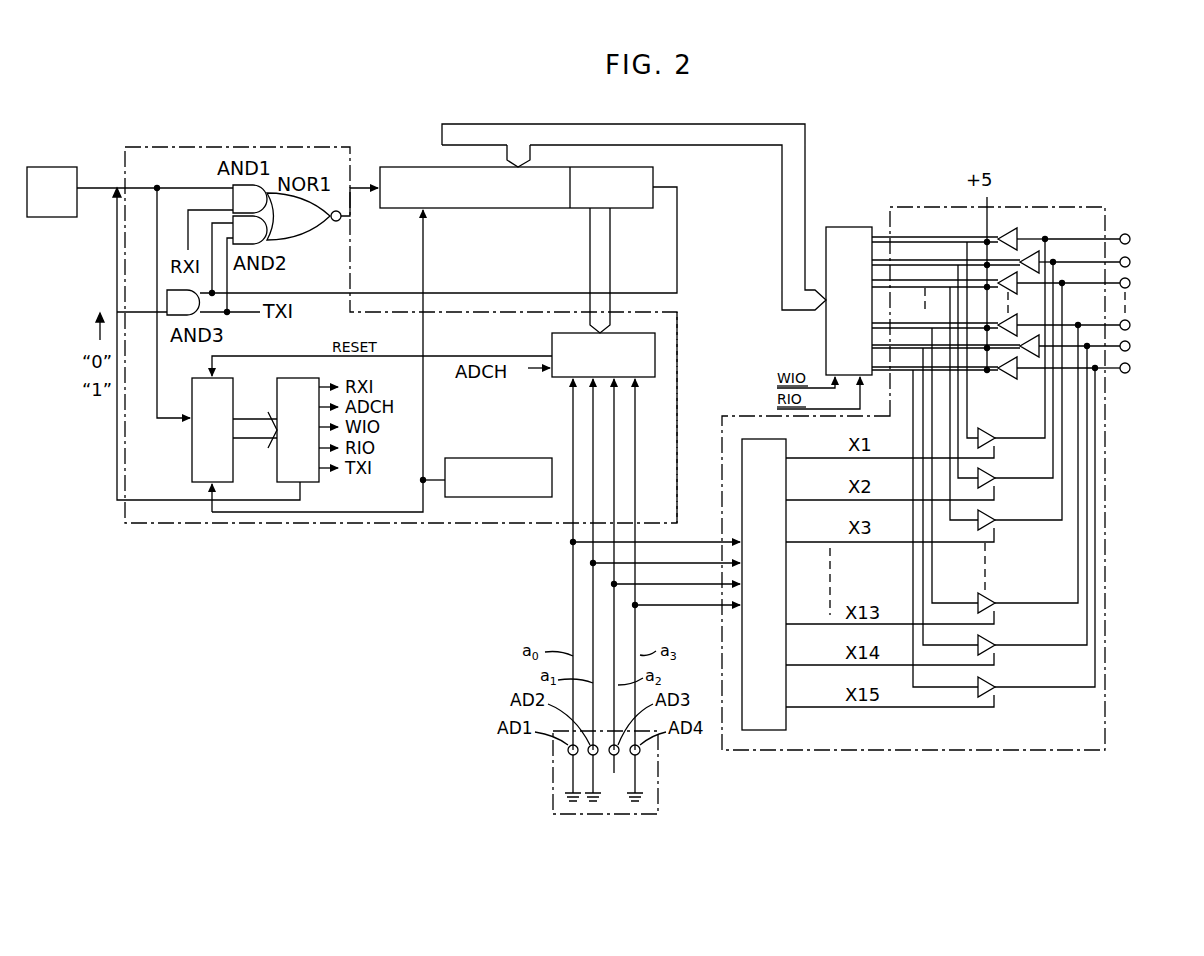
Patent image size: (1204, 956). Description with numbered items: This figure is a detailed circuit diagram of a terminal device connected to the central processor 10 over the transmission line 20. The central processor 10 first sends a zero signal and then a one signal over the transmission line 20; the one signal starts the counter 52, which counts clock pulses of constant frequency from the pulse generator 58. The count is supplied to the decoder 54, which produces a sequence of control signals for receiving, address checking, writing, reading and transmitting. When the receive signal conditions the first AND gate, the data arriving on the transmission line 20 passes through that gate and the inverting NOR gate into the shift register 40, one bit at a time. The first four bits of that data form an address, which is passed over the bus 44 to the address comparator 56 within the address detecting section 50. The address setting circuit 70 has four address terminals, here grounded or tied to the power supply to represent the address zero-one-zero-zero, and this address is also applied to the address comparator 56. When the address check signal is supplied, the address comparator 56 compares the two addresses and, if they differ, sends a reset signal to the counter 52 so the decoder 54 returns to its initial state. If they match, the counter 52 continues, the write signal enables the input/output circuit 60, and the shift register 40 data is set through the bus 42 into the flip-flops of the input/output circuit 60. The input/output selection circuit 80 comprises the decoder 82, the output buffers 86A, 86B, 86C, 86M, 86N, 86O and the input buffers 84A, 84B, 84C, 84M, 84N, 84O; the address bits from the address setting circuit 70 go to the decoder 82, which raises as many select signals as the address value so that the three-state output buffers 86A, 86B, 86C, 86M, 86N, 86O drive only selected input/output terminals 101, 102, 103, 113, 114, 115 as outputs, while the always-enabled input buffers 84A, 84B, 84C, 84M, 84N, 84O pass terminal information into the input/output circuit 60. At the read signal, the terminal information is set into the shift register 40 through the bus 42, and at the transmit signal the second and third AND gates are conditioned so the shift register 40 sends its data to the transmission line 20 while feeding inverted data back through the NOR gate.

The central processor 10 is at (60, 217).
The transmission line 20 is at (92, 187).
The shift register 40 is at (653, 178).
The bus 42 is at (535, 124).
The bus 44 is at (610, 252).
The address detection circuit 50 is at (677, 352).
The counter 52 is at (192, 455).
The decoder 54 is at (277, 463).
The address comparator 56 is at (552, 342).
The pulse generator 58 is at (510, 458).
The input/output circuit 60 is at (851, 227).
The address setting circuit 70 is at (553, 800).
The input/output selection circuit 80 is at (1105, 215).
The decoder 82 is at (786, 448).
The input buffer 84A is at (1005, 228).
The input buffer 84B is at (1028, 251).
The input buffer 84C is at (1008, 272).
The input buffer 84M is at (1007, 336).
The input buffer 84N is at (1030, 357).
The input buffer 84O is at (1008, 379).
The output buffer 86A is at (990, 446).
The output buffer 86B is at (990, 486).
The output buffer 86C is at (990, 528).
The output buffer 86M is at (995, 601).
The output buffer 86N is at (995, 643).
The output buffer 86O is at (995, 685).
The input/output terminal 101 is at (1130, 239).
The input/output terminal 102 is at (1130, 262).
The input/output terminal 103 is at (1130, 283).
The input/output terminal 113 is at (1130, 325).
The input/output terminal 114 is at (1130, 346).
The input/output terminal 115 is at (1130, 368).